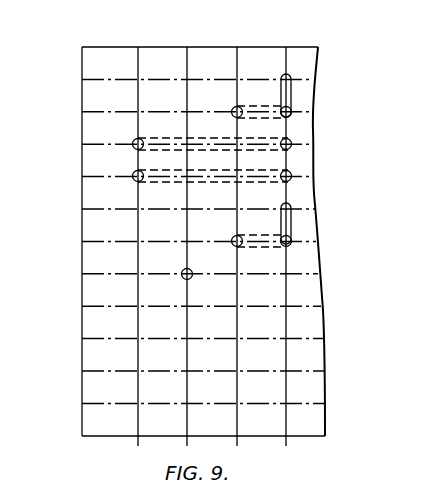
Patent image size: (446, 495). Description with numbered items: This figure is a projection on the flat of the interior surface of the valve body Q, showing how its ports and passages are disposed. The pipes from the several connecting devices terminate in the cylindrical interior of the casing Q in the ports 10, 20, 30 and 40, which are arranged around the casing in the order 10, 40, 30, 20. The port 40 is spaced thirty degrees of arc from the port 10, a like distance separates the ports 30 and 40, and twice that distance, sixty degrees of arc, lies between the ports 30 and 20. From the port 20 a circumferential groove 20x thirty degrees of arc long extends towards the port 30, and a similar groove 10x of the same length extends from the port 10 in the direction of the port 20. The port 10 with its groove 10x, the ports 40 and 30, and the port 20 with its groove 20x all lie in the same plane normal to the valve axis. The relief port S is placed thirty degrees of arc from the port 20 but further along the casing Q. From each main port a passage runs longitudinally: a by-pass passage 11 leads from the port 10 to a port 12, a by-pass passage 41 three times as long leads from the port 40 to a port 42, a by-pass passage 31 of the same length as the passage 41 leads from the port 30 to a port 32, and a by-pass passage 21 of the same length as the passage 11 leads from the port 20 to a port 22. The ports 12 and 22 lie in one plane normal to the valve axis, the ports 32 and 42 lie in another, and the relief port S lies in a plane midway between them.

The valve body Q is at (297, 417).
The relief port S is at (191, 278).
The port 10 is at (292, 112).
The circumferential groove 10x is at (288, 95).
The by-pass passage 11 is at (262, 105).
The port 12 is at (239, 107).
The port 20 is at (292, 241).
The circumferential groove 20x is at (290, 218).
The by-pass passage 21 is at (237, 247).
The port 22 is at (265, 247).
The port 30 is at (292, 176).
The by-pass passage 31 is at (188, 181).
The port 32 is at (134, 178).
The port 40 is at (292, 144).
The by-pass passage 41 is at (178, 137).
The port 42 is at (136, 139).